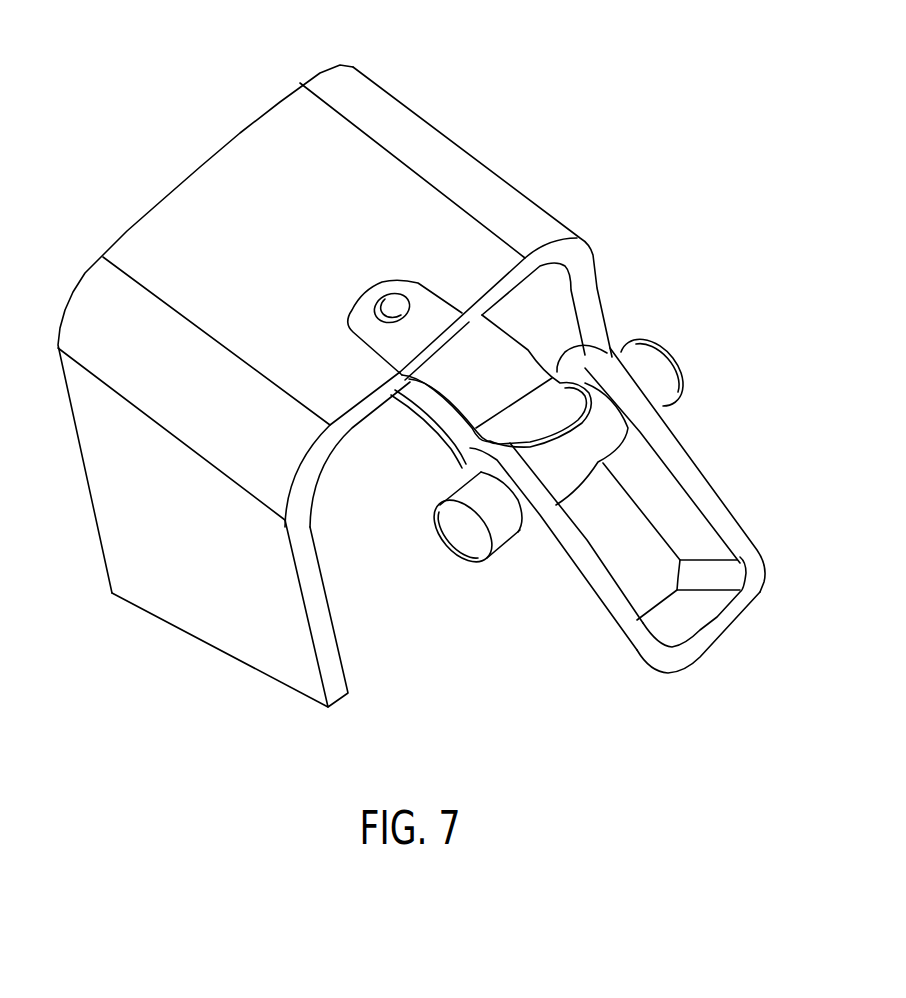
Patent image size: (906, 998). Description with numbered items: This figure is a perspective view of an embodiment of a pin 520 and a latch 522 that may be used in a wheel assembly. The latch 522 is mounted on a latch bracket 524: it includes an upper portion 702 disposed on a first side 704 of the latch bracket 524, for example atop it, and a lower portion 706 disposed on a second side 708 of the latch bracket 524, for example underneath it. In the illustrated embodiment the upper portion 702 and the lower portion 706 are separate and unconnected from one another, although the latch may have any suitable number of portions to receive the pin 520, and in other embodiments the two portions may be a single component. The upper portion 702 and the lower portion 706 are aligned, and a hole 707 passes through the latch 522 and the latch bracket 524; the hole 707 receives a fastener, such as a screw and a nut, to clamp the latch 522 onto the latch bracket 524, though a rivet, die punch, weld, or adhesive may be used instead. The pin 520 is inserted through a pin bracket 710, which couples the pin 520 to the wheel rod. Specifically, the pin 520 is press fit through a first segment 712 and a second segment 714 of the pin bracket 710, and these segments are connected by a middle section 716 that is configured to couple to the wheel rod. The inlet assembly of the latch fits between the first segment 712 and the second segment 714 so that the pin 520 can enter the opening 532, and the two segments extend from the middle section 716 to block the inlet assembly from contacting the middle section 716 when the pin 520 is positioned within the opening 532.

The first side 704 is at (188, 97).
The latch 522 is at (466, 241).
The latch bracket 524 is at (190, 237).
The second side 708 is at (346, 455).
The upper portion 702 is at (404, 291).
The hole 707 is at (383, 312).
The lower portion 706 is at (412, 386).
The pin bracket 710 is at (652, 713).
The first segment 712 is at (548, 585).
The second segment 714 is at (690, 468).
The middle section 716 is at (713, 627).
The pin 520 is at (637, 348).
The opening 532 is at (443, 413).